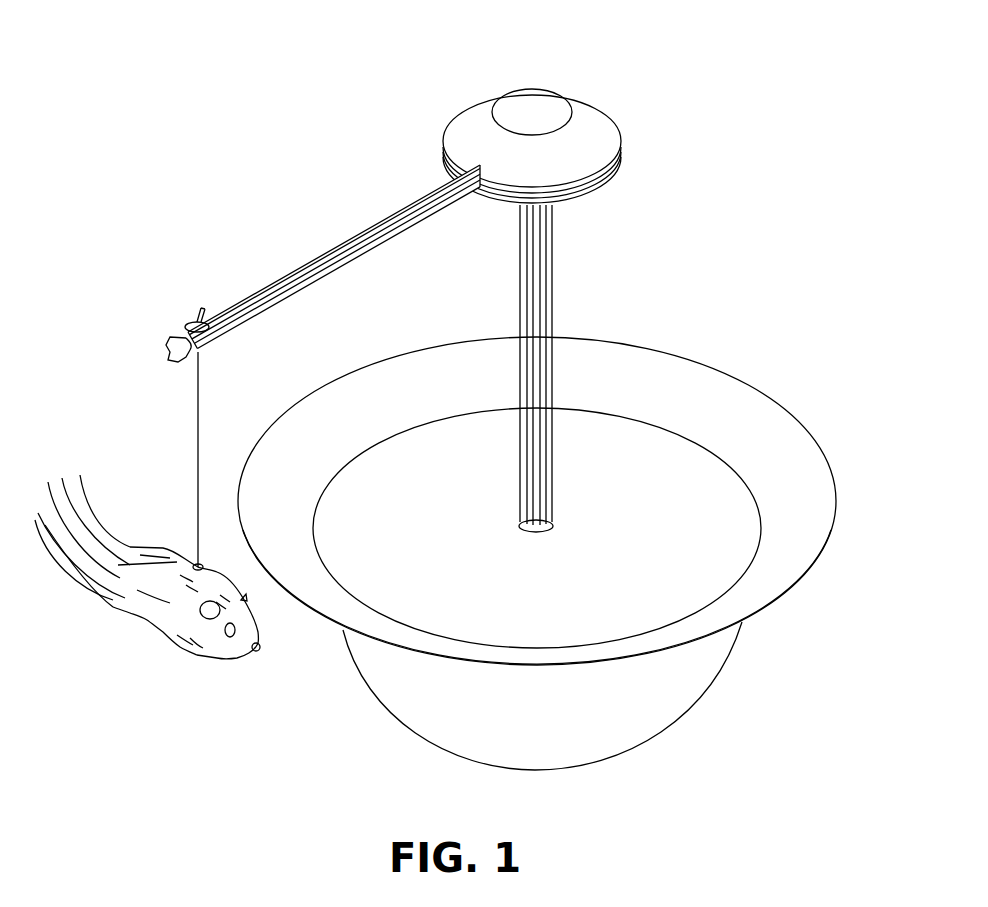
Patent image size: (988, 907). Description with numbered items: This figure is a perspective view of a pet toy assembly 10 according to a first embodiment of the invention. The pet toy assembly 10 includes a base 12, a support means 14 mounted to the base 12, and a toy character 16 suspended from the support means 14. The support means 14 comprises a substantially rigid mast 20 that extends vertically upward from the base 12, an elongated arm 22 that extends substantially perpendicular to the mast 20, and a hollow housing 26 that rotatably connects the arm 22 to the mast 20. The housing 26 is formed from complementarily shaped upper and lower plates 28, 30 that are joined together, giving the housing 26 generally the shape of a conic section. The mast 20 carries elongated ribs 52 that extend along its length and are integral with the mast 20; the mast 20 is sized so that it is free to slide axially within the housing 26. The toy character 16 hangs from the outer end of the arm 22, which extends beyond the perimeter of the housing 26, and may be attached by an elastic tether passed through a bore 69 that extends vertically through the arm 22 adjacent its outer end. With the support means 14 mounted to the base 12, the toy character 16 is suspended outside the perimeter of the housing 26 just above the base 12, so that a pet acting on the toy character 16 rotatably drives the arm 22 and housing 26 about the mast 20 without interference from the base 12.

The pet toy assembly 10 is at (215, 76).
The base 12 is at (710, 678).
The support means 14 is at (470, 277).
The toy character 16 is at (162, 650).
The mast 20 is at (533, 490).
The elongated arm 22 is at (300, 262).
The hollow housing 26 is at (623, 138).
The upper plate 28 is at (593, 107).
The lower plate 30 is at (577, 200).
The elongated ribs 52 is at (532, 237).
The bore 69 is at (193, 322).